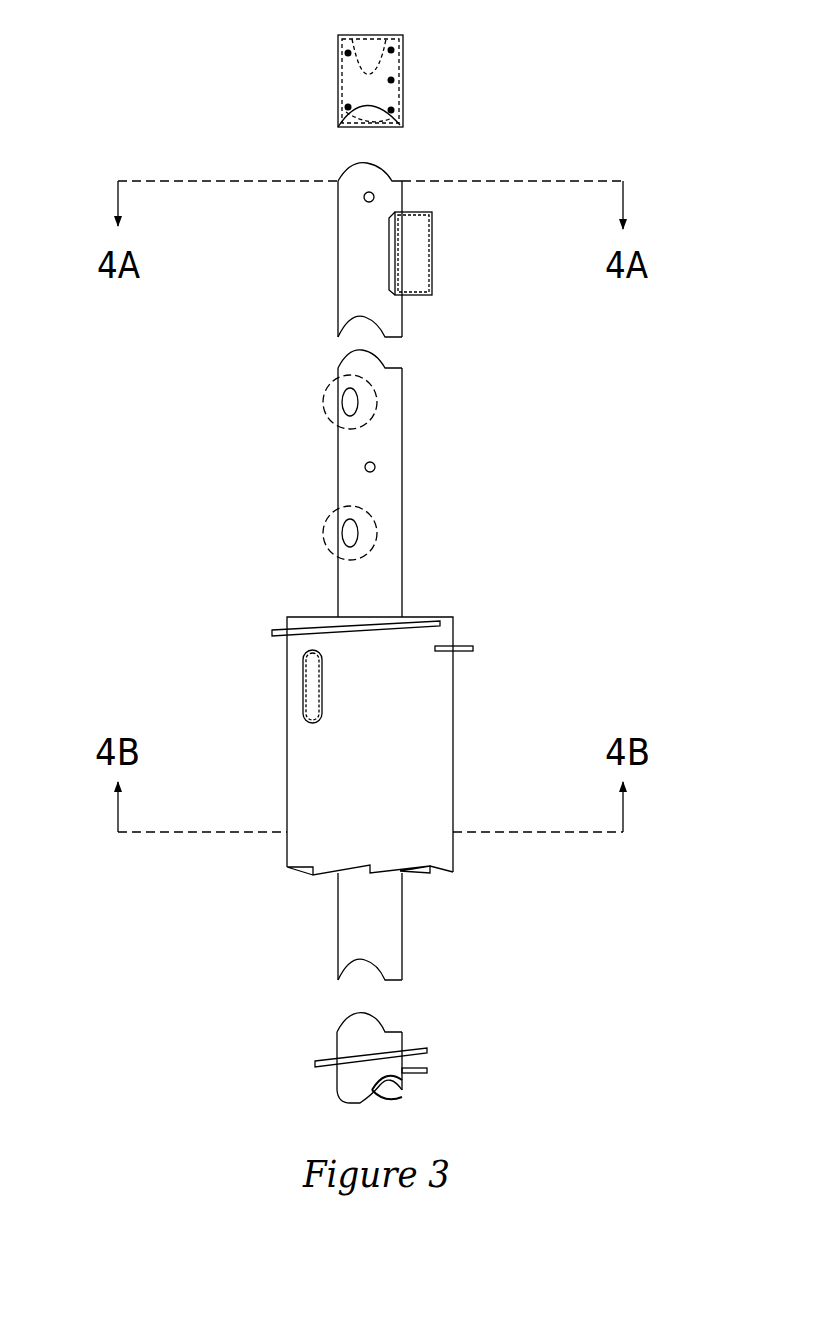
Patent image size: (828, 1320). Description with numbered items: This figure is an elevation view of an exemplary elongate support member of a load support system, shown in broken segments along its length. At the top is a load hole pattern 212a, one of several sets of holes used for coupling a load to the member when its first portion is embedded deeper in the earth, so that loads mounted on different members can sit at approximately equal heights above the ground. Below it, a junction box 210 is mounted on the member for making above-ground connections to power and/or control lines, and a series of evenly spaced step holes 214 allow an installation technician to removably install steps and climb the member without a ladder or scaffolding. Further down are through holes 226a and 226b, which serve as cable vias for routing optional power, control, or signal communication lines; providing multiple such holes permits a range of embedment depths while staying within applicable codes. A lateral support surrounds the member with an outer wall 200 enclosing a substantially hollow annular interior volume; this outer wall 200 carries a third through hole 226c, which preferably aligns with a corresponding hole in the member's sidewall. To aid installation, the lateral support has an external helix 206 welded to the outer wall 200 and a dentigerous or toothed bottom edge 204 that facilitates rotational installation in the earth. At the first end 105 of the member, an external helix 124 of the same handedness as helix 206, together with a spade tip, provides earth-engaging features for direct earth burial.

The first end 105 is at (403, 1095).
The external helix 124 is at (313, 1060).
The outer wall 200 is at (293, 753).
The toothed bottom edge 204 is at (437, 875).
The external helix 206 is at (258, 638).
The junction box 210 is at (432, 253).
The load hole pattern 212a is at (401, 90).
The step holes 214 is at (361, 201).
The through hole 226a is at (321, 417).
The through hole 226b is at (327, 548).
The through hole 226c is at (300, 690).